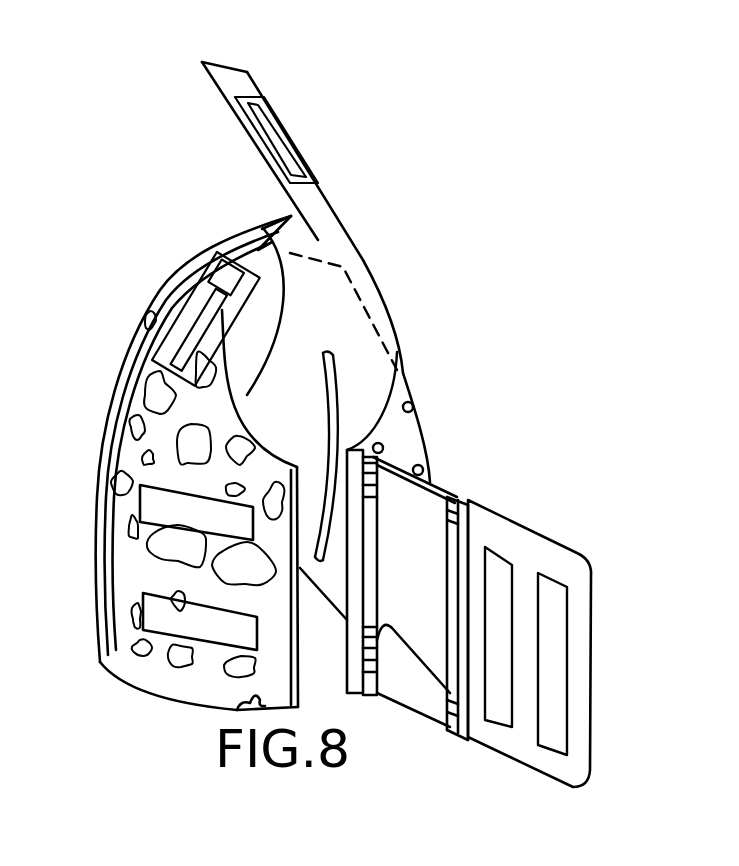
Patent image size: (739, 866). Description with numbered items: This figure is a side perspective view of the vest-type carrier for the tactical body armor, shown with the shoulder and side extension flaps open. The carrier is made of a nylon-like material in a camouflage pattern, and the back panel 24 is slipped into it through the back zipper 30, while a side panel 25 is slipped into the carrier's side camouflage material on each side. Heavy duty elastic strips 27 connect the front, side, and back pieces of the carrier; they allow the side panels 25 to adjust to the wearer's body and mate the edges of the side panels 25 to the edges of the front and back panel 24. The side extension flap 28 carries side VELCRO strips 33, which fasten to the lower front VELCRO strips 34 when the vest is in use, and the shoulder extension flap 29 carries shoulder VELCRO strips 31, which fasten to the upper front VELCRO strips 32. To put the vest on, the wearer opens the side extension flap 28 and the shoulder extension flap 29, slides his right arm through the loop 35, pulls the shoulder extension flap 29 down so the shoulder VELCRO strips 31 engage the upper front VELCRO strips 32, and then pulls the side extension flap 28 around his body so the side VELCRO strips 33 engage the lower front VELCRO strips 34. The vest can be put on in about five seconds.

The back panel 24 is at (387, 330).
The side panel 25 is at (417, 507).
The elastic strips 27 is at (384, 595).
The side extension flap 28 is at (520, 523).
The shoulder extension flap 29 is at (240, 72).
The back zipper 30 is at (323, 357).
The shoulder VELCRO strips 31 is at (262, 100).
The upper front VELCRO strips 32 is at (190, 275).
The side VELCRO strips 33 is at (550, 577).
The lower front VELCRO strips 34 is at (157, 613).
The loop 35 is at (233, 232).